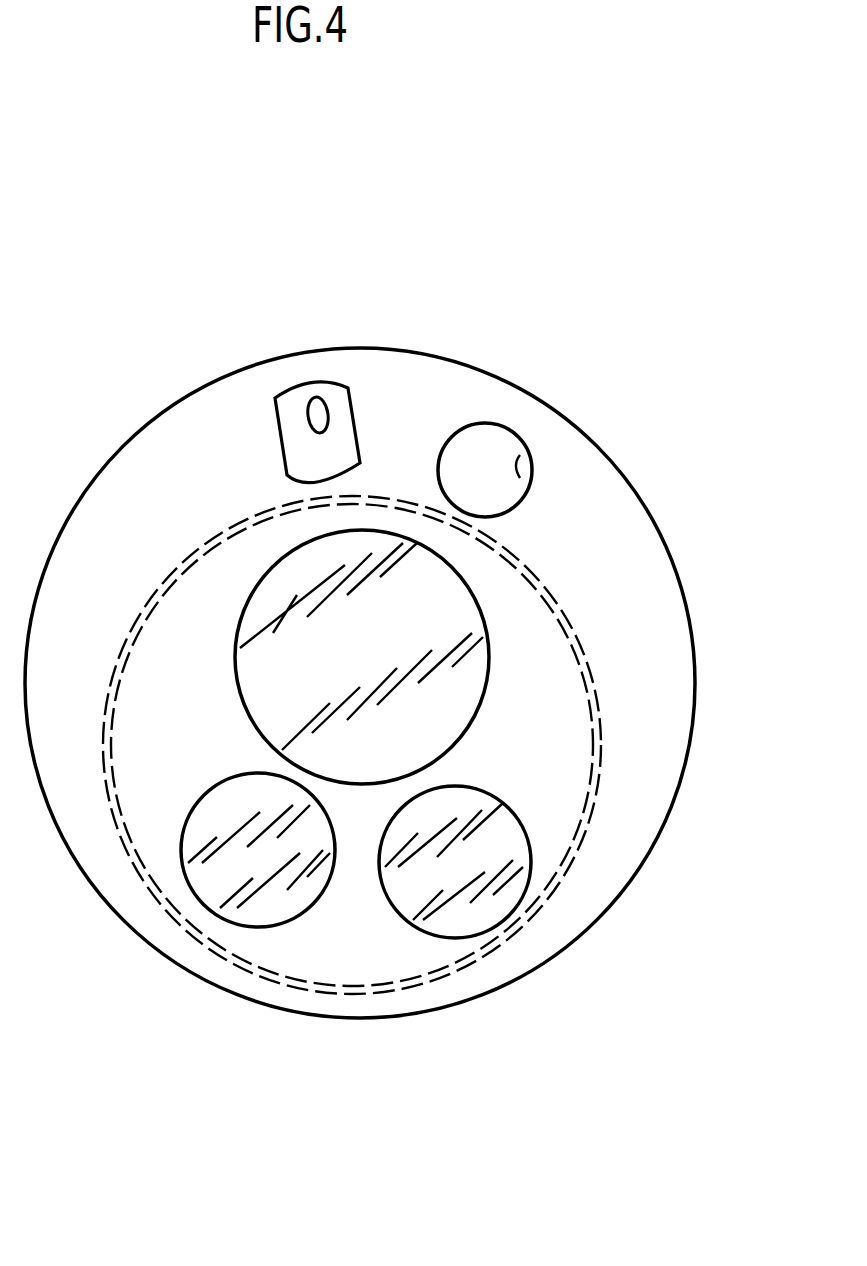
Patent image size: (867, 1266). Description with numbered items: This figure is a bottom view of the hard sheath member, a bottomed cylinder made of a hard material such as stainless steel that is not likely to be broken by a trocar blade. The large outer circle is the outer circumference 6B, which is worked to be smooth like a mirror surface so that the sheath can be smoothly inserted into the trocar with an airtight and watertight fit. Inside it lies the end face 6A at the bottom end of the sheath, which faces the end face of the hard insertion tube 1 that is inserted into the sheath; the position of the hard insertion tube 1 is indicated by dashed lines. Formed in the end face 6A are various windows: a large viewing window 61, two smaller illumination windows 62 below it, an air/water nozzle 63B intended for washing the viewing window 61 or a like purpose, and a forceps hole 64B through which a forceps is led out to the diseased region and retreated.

The hard insertion tube 1 is at (567, 857).
The end face 6A is at (555, 755).
The outer circumference 6B is at (187, 972).
The viewing window 61 is at (473, 695).
The illumination windows 62 is at (462, 917).
The air/water nozzle 63B is at (313, 413).
The forceps hole 64B is at (530, 475).